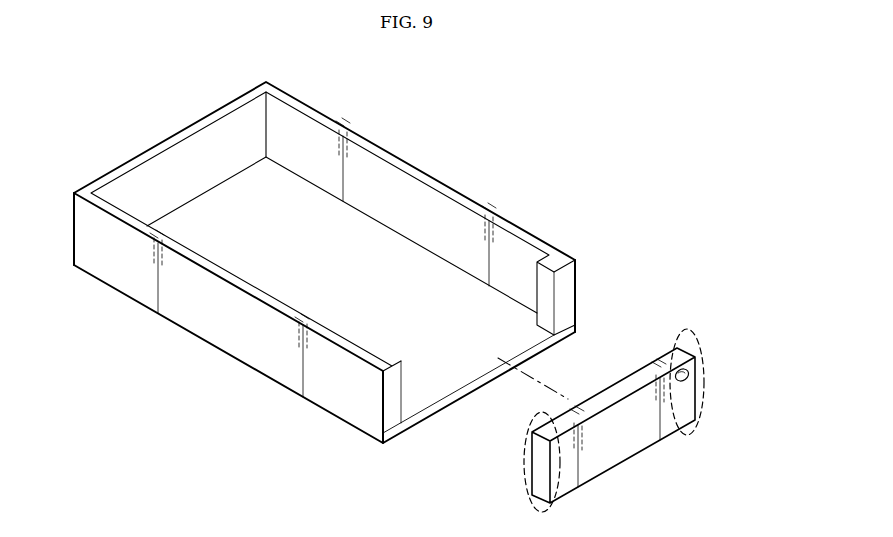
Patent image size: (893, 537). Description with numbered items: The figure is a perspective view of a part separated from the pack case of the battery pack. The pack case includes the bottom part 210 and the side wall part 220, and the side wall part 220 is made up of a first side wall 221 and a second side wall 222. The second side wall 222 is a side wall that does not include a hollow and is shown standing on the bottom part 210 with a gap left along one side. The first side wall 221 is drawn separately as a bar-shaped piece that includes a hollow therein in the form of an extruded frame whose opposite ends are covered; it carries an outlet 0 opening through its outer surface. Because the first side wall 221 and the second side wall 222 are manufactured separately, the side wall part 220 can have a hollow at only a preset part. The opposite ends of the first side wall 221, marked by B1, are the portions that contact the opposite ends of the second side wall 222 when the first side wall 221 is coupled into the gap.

The side wall part 220 is at (715, 172).
The first side wall 221 is at (623, 452).
The second side wall 222 is at (212, 127).
The bottom part 210 is at (192, 215).
The opposite ends of the first side wall B1 is at (535, 420).
The outlet 0 is at (689, 376).